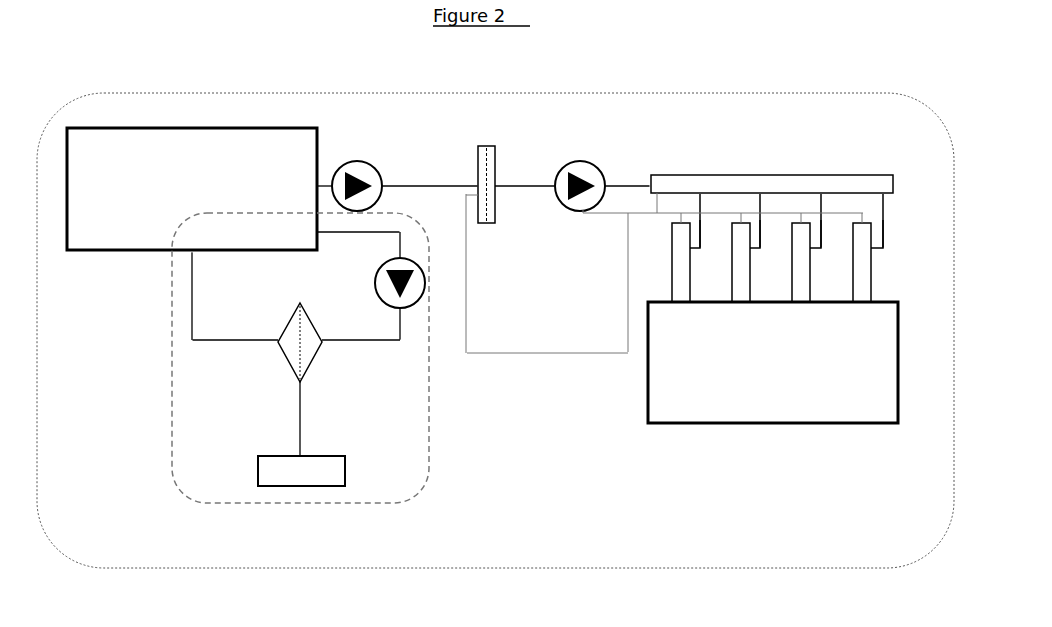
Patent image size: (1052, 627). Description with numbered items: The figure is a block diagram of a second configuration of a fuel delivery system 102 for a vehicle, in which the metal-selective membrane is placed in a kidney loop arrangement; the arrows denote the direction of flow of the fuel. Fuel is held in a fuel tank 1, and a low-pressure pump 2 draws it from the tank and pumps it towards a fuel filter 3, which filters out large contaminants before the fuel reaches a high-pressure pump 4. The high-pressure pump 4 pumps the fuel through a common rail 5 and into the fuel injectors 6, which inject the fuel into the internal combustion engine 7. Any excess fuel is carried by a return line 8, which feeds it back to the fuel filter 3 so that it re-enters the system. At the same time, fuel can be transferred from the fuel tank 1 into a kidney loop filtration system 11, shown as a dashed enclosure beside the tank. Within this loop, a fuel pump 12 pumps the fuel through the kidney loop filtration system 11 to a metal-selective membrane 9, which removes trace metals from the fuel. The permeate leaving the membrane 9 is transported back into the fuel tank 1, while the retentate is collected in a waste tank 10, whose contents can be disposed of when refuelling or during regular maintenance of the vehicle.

The fuel tank 1 is at (192, 189).
The low-pressure pump 2 is at (349, 176).
The fuel filter 3 is at (486, 172).
The high-pressure pump 4 is at (580, 170).
The common rail 5 is at (779, 184).
The fuel injectors 6 is at (760, 247).
The internal combustion engine 7 is at (773, 362).
The return line 8 is at (550, 287).
The metal-selective membrane 9 is at (296, 317).
The waste tank 10 is at (319, 434).
The kidney loop filtration system 11 is at (170, 393).
The fuel pump 12 is at (371, 285).
The fuel delivery system 102 is at (890, 93).